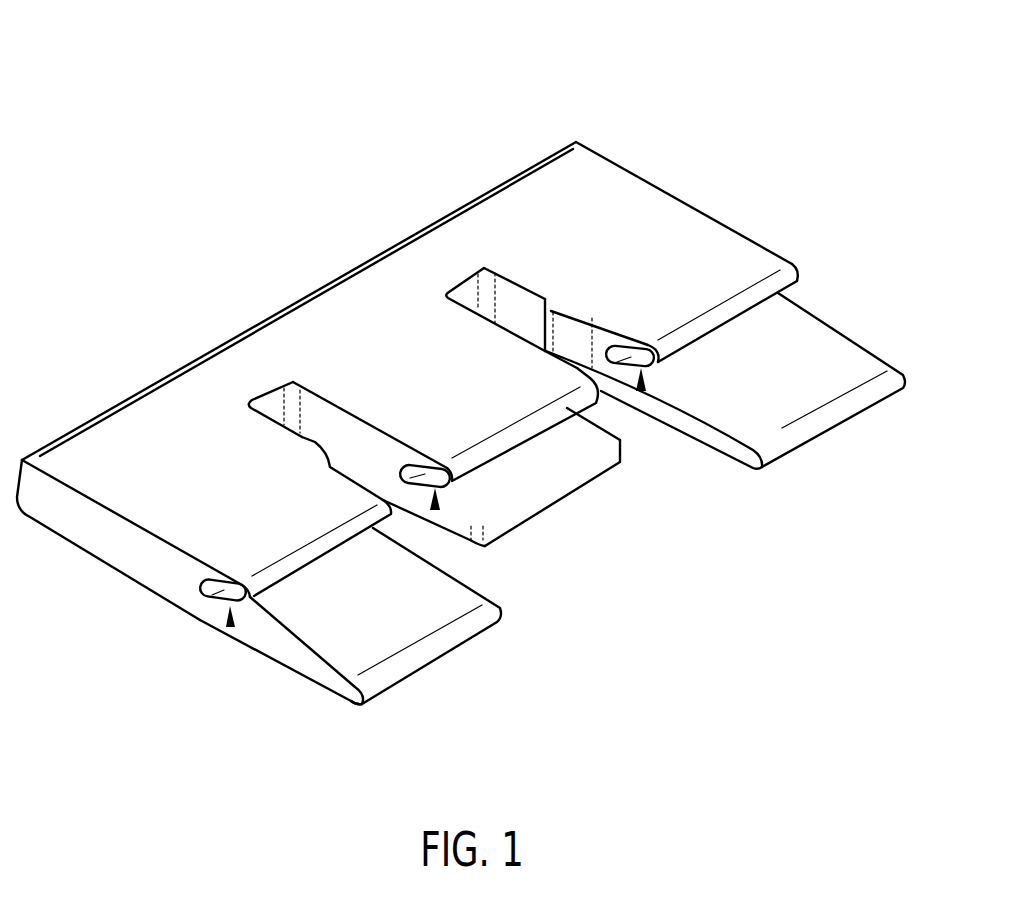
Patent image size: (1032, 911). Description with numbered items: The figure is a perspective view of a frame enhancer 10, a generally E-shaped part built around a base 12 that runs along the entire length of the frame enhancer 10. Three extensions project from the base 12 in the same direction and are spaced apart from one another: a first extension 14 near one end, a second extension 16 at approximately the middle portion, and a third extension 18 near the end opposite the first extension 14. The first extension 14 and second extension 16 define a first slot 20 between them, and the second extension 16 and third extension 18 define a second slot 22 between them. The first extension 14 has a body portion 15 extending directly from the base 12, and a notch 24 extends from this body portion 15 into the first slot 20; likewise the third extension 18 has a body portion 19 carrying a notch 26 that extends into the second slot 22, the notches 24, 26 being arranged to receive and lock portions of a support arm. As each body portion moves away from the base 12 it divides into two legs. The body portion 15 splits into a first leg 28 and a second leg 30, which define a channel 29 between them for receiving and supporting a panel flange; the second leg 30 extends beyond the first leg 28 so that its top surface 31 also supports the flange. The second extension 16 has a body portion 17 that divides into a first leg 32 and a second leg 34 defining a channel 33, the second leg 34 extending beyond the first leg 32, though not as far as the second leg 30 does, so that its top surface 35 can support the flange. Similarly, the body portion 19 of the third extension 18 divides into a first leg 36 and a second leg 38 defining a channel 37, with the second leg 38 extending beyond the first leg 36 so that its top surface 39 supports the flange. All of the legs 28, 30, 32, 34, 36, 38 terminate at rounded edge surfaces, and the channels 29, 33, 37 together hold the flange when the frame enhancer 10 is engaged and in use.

The frame enhancer 10 is at (169, 84).
The base 12 is at (156, 381).
The first extension 14 is at (160, 582).
The body portion 15 is at (123, 555).
The second extension 16 is at (412, 325).
The body portion 17 is at (374, 456).
The third extension 18 is at (663, 207).
The body portion 19 is at (625, 181).
The first slot 20 is at (303, 399).
The second slot 22 is at (513, 297).
The notch 24 is at (310, 447).
The notch 26 is at (551, 309).
The first leg 28 is at (230, 589).
The channel 29 is at (230, 627).
The second leg 30 is at (350, 700).
The top surface 31 is at (372, 615).
The first leg 32 is at (524, 428).
The channel 33 is at (435, 510).
The second leg 34 is at (500, 527).
The top surface 35 is at (540, 473).
The first leg 36 is at (800, 280).
The channel 37 is at (641, 391).
The second leg 38 is at (867, 371).
The top surface 39 is at (753, 398).